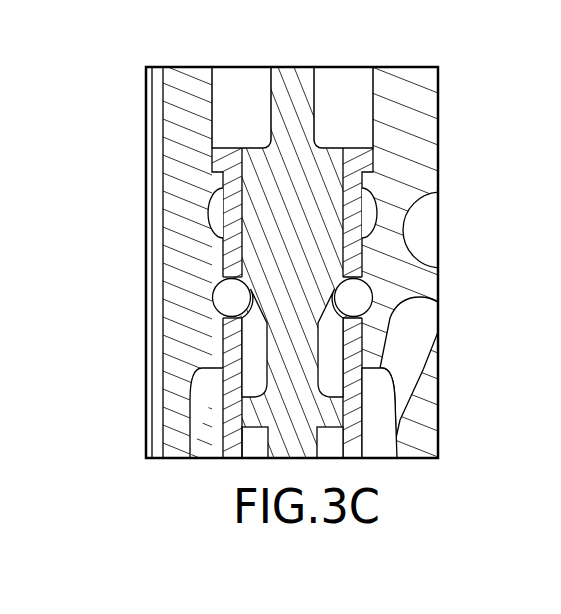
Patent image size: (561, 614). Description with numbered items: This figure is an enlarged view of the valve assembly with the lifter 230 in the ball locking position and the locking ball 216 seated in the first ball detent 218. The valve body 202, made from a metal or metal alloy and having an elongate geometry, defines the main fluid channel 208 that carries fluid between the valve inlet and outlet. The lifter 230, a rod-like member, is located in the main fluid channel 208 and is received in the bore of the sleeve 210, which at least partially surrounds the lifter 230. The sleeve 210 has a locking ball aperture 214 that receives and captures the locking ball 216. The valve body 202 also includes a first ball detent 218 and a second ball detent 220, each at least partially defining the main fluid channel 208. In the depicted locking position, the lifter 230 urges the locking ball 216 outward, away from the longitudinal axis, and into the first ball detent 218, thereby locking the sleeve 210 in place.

The valve body 202 is at (183, 72).
The main fluid channel 208 is at (256, 112).
The sleeve 210 is at (230, 402).
The locking ball aperture 214 is at (237, 323).
The locking ball 216 is at (220, 302).
The first ball detent 218 is at (211, 292).
The second ball detent 220 is at (207, 213).
The lifter 230 is at (297, 75).